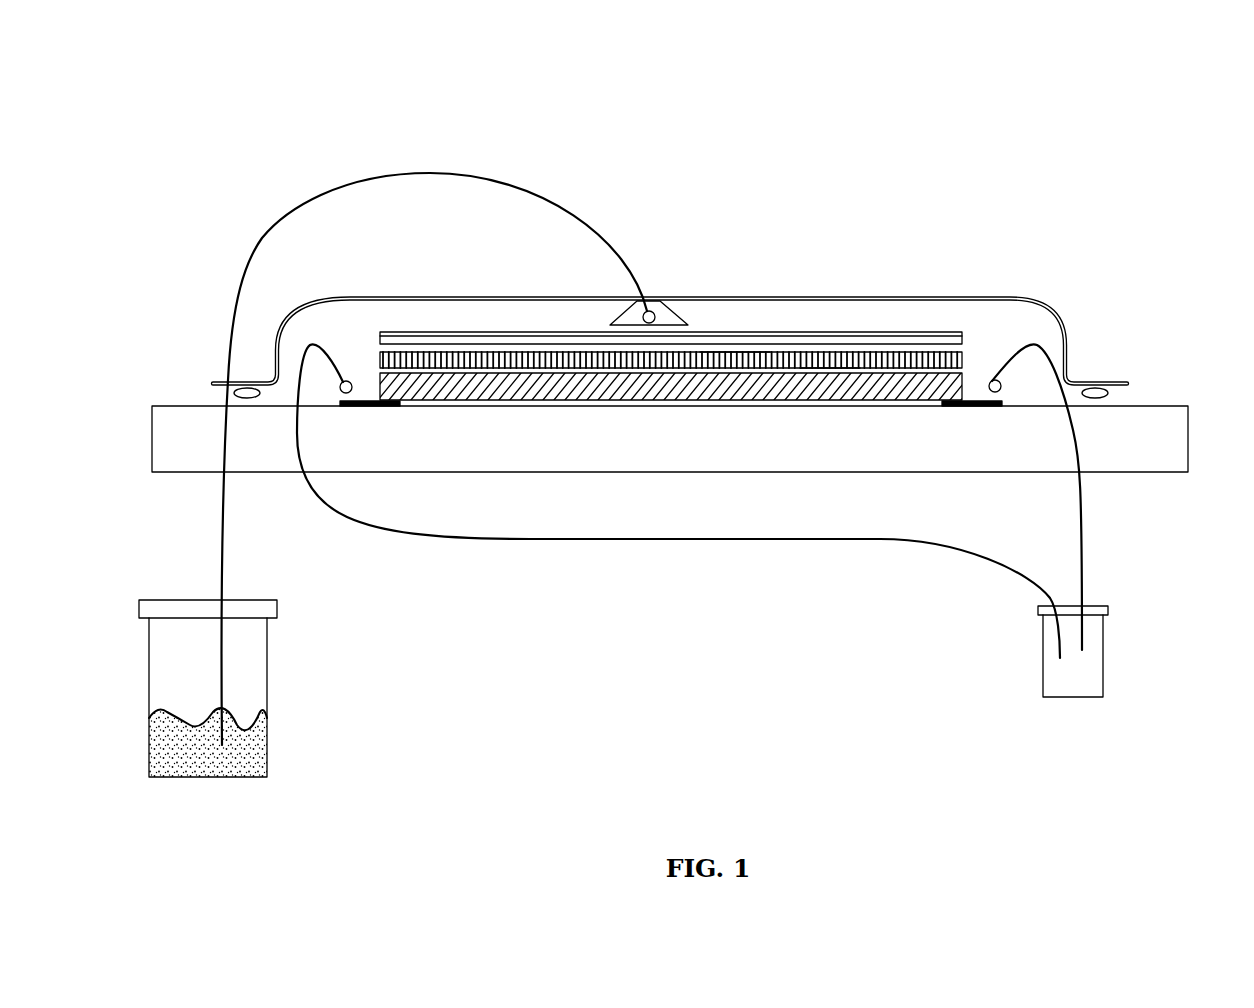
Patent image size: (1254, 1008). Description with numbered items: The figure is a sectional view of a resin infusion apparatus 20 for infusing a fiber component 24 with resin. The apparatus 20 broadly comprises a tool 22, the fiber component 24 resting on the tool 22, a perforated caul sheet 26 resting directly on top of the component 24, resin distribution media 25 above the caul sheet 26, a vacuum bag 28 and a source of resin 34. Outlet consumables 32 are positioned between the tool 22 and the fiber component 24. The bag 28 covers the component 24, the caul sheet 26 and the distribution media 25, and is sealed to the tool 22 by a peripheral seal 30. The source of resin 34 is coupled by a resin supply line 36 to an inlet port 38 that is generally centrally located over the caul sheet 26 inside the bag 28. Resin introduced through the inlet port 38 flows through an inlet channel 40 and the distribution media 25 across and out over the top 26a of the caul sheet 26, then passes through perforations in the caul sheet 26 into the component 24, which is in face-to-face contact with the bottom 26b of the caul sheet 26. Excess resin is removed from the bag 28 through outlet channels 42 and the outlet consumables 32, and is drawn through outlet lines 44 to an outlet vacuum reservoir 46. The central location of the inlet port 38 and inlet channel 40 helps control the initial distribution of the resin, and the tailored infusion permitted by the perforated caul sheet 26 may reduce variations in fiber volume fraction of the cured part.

The resin infusion apparatus 20 is at (262, 108).
The tool 22 is at (1167, 438).
The fiber component 24 is at (795, 390).
The resin distribution media 25 is at (538, 338).
The perforated caul sheet 26 is at (510, 357).
The top of the caul sheet 26a is at (735, 343).
The bottom of the caul sheet 26b is at (832, 374).
The vacuum bag 28 is at (943, 297).
The peripheral seal 30 is at (1095, 389).
The outlet consumables 32 is at (368, 407).
The source of resin 34 is at (173, 743).
The resin supply line 36 is at (262, 240).
The inlet port 38 is at (660, 310).
The inlet channel 40 is at (615, 320).
The outlet channels 42 is at (348, 381).
The outlet lines 44 is at (728, 541).
The outlet vacuum reservoir 46 is at (1083, 675).